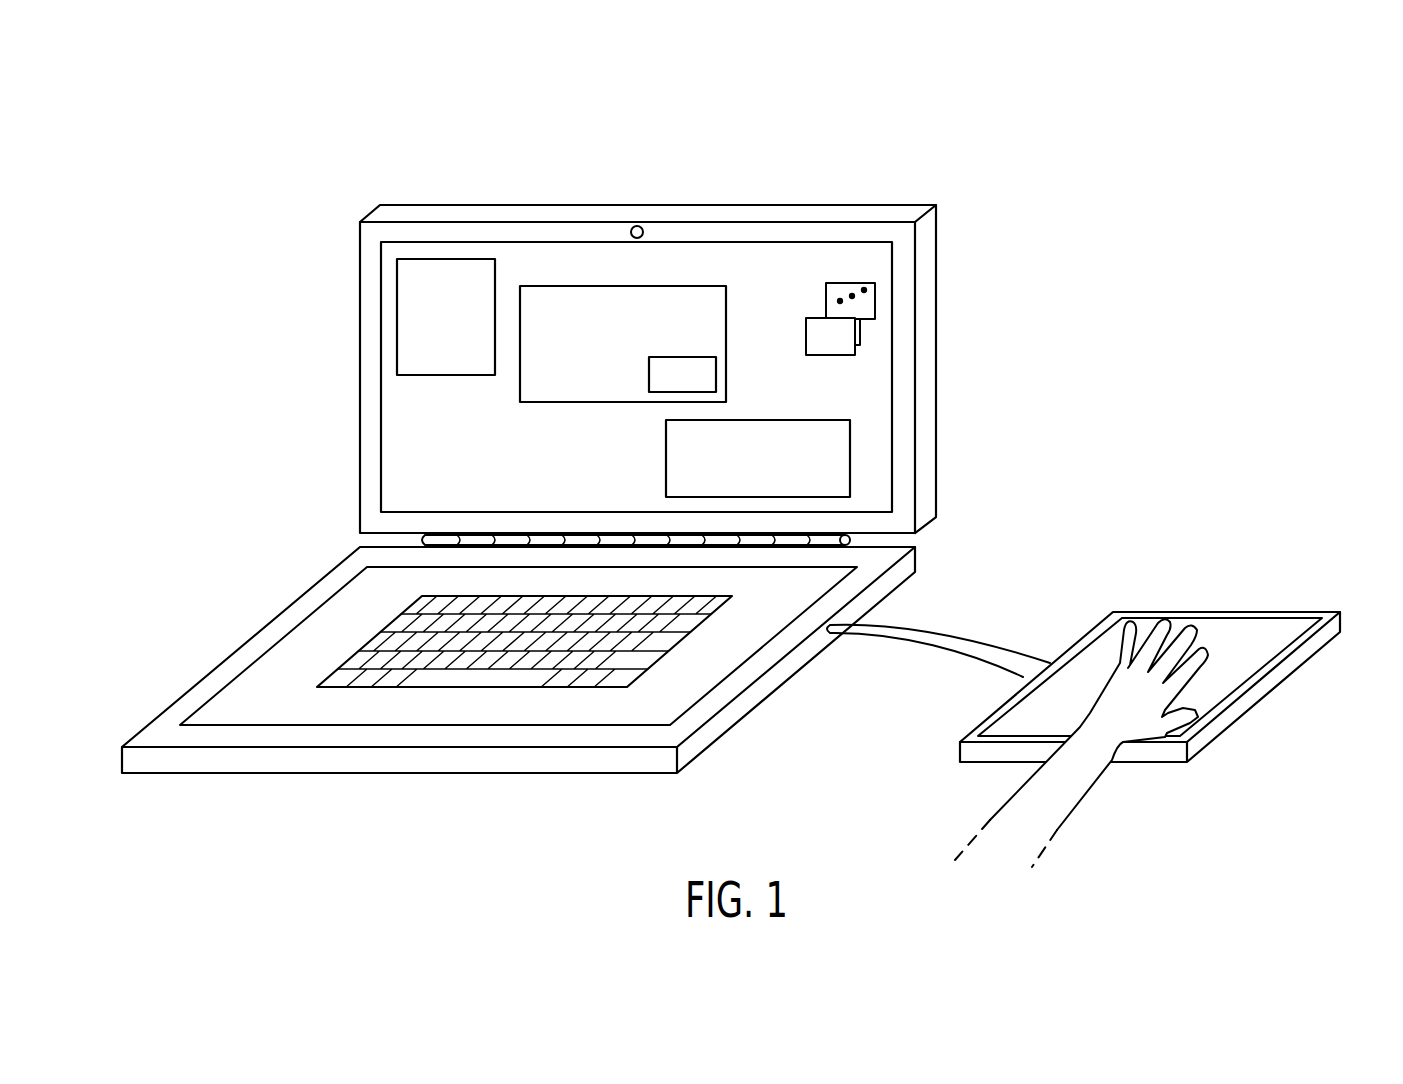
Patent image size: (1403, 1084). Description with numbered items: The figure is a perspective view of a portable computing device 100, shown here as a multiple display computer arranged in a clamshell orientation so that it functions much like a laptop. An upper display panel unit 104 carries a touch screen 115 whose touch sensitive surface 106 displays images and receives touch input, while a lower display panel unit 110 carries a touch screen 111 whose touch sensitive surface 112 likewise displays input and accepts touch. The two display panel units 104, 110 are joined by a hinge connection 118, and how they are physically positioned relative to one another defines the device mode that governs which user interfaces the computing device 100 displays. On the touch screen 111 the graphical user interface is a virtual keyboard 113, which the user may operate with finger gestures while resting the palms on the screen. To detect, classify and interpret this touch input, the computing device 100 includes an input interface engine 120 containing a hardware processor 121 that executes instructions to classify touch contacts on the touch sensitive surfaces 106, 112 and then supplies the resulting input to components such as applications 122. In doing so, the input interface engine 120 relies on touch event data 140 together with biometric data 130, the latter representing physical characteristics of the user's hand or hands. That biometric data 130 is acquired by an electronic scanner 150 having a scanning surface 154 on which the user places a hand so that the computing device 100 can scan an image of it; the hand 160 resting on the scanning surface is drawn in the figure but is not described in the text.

The portable computing device 100 is at (950, 135).
The display panel unit 104 is at (917, 377).
The touch sensitive surface 106 is at (873, 478).
The display panel unit 110 is at (728, 675).
The touch screen 111 is at (685, 713).
The touch sensitive surface 112 is at (645, 703).
The virtual keyboard 113 is at (368, 640).
The touch screen 115 is at (875, 455).
The hinge connection 118 is at (388, 543).
The input interface engine 120 is at (625, 403).
The hardware processor 121 is at (716, 373).
The applications 122 is at (838, 270).
The biometric data 130 is at (664, 466).
The touch event data 140 is at (445, 377).
The electronic scanner 150 is at (1263, 611).
The scanning surface 154 is at (1255, 650).
The user hand 160 is at (1092, 700).